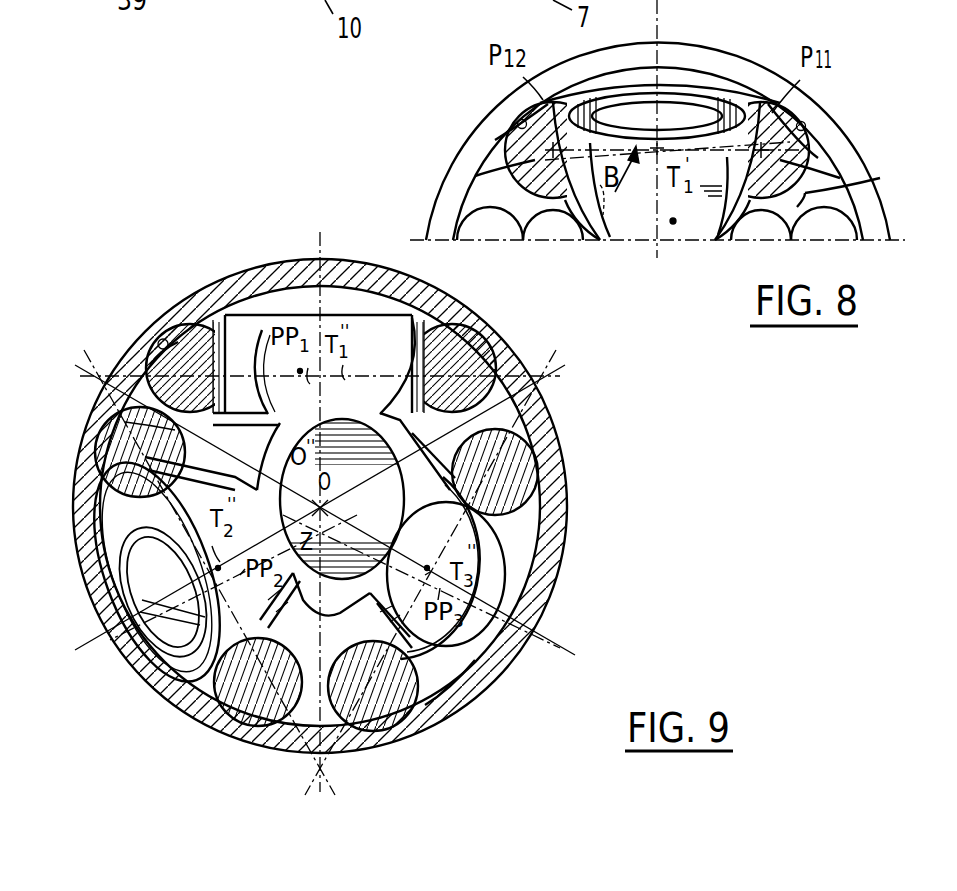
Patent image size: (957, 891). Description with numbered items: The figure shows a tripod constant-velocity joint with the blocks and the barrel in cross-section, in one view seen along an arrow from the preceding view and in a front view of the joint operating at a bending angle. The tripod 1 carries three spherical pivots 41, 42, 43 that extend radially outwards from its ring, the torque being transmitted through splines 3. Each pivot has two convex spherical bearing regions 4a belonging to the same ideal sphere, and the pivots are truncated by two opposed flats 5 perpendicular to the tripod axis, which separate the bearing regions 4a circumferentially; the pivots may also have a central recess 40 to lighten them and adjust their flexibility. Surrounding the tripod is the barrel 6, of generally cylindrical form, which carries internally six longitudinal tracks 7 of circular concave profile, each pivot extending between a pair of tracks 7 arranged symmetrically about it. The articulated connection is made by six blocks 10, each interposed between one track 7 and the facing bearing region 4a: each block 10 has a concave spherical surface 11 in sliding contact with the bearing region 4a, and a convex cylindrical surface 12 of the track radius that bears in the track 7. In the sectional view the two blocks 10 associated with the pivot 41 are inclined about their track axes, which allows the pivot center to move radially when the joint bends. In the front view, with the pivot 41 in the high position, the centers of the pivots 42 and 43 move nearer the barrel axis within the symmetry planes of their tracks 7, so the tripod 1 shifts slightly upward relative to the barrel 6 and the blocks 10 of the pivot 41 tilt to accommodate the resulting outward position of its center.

In FIG. 9, the tripod 1 is at (125, 422).
In FIG. 8, the splines 3 is at (847, 177).
In FIG. 8, the spherical bearing regions 4a is at (600, 236).
In FIG. 9, the spherical bearing regions 4a is at (495, 338).
In FIG. 8, the flats 5 is at (681, 217).
In FIG. 9, the flats 5 is at (215, 677).
In FIG. 8, the barrel 6 is at (470, 119).
In FIG. 9, the barrel 6 is at (240, 262).
In FIG. 8, the longitudinal tracks 7 is at (519, 121).
In FIG. 9, the longitudinal tracks 7 is at (160, 340).
In FIG. 8, the blocks 10 is at (475, 176).
In FIG. 9, the blocks 10 is at (432, 703).
In FIG. 8, the concave spherical surface 11 is at (525, 233).
In FIG. 9, the concave spherical surface 11 is at (222, 330).
In FIG. 8, the convex cylindrical surface 12 is at (495, 140).
In FIG. 9, the convex cylindrical surface 12 is at (150, 365).
In FIG. 9, the central recess 40 is at (165, 645).
In FIG. 8, the spherical pivot 41 is at (670, 84).
In FIG. 9, the spherical pivot 41 is at (300, 308).
In FIG. 9, the spherical pivot 42 is at (150, 670).
In FIG. 9, the spherical pivot 43 is at (497, 647).